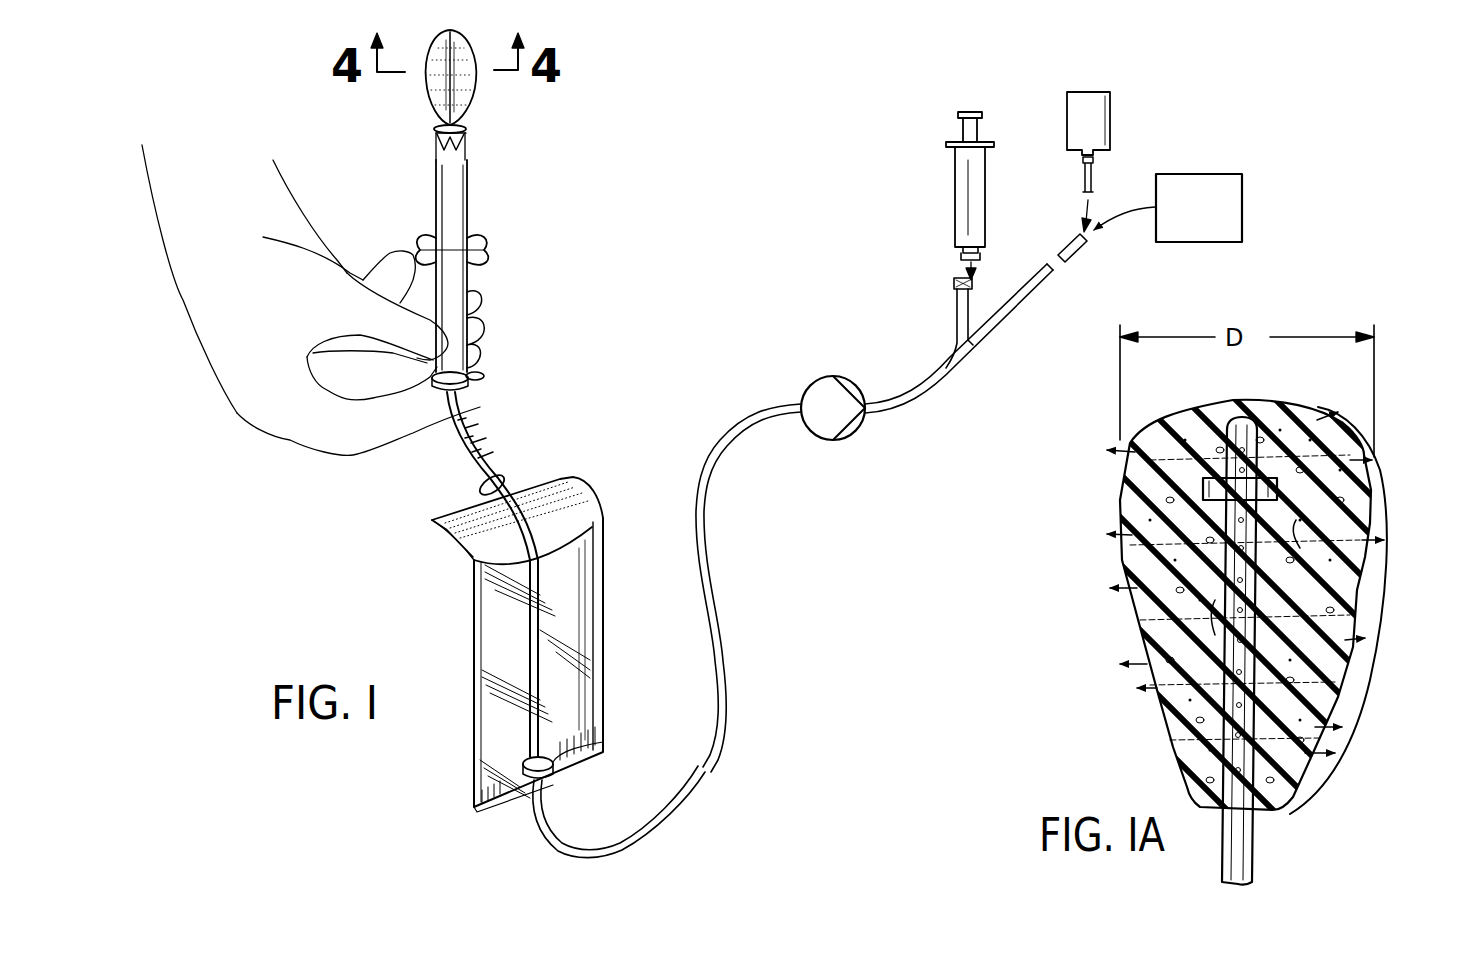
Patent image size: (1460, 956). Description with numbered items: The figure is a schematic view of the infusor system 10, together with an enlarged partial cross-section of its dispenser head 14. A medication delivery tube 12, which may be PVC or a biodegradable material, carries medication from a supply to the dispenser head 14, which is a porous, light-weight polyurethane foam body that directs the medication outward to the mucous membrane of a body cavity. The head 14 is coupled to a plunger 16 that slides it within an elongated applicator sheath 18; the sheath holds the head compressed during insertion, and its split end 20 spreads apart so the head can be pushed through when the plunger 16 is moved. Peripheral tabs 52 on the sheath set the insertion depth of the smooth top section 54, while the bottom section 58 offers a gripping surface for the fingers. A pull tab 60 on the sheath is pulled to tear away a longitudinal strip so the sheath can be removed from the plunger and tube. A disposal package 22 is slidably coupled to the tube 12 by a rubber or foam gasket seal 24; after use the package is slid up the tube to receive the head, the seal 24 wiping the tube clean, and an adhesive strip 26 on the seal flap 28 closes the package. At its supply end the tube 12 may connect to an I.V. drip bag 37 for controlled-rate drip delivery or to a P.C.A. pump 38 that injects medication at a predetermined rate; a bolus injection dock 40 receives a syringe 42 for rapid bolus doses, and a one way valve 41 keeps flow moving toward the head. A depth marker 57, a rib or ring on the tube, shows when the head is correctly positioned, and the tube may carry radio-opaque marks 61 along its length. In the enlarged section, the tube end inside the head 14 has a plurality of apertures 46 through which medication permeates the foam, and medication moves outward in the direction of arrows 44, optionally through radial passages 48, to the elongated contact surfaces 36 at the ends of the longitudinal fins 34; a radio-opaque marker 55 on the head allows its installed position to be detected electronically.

In FIG. 1, the infusor system 10 is at (327, 582).
In FIG. 1, the medication delivery tube 12 is at (462, 422).
In FIG. 1, the dispenser head 14 is at (420, 94).
In FIG. 1A, the dispenser head 14 is at (1115, 724).
In FIG. 1, the plunger 16 is at (472, 136).
In FIG. 1, the applicator sheath 18 is at (475, 209).
In FIG. 1, the split end 20 is at (438, 140).
In FIG. 1, the disposal package 22 is at (490, 676).
In FIG. 1, the gasket seal 24 is at (575, 745).
In FIG. 1, the adhesive strip 26 is at (560, 478).
In FIG. 1, the seal flap 28 is at (452, 542).
In FIG. 1, the longitudinal fins 34 is at (466, 86).
In FIG. 1A, the longitudinal fins 34 is at (1335, 698).
In FIG. 1A, the elongated contact surfaces 36 is at (1368, 590).
In FIG. 1, the I.V. drip bag 37 is at (1095, 112).
In FIG. 1, the P.C.A. pump 38 is at (1215, 174).
In FIG. 1, the bolus injection dock 40 is at (955, 286).
In FIG. 1, the one way valve 41 is at (840, 375).
In FIG. 1, the syringe 42 is at (945, 192).
In FIG. 1A, the arrows 44 is at (1258, 580).
In FIG. 1A, the apertures 46 is at (1240, 640).
In FIG. 1A, the passages 48 is at (1257, 512).
In FIG. 1, the peripheral tabs 52 is at (486, 255).
In FIG. 1, the top section 54 is at (446, 180).
In FIG. 1A, the radio-opaque marker 55 is at (1203, 488).
In FIG. 1, the depth marker 57 is at (498, 478).
In FIG. 1, the bottom section 58 is at (478, 310).
In FIG. 1, the pull tab 60 is at (478, 374).
In FIG. 1, the radio-opaque marks 61 is at (470, 444).